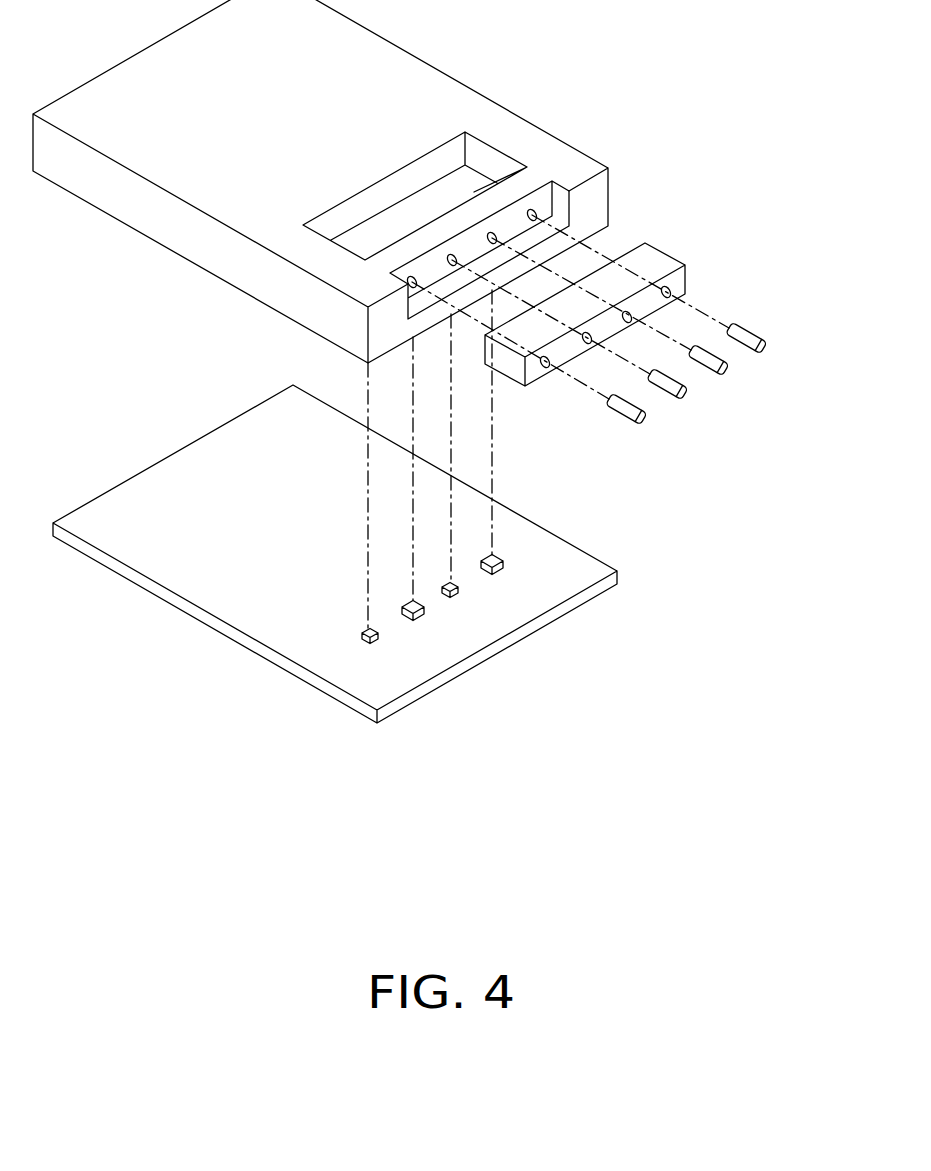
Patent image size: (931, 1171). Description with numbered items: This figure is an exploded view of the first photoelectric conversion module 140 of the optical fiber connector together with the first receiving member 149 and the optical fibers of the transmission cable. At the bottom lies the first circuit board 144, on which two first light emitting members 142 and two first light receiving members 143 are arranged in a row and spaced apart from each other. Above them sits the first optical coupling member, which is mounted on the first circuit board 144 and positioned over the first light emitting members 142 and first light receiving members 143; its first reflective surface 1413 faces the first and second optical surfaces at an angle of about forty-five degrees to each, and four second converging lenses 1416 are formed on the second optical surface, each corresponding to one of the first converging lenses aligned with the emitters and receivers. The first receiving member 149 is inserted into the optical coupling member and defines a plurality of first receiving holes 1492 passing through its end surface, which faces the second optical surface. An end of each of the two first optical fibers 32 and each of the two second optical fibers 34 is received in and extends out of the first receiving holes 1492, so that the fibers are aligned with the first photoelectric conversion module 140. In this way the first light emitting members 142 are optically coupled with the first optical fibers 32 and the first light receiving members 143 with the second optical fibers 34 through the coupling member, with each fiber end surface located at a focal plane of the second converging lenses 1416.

The first photoelectric conversion module 140 is at (417, 27).
The first reflective surface 1413 is at (474, 196).
The second converging lenses 1416 is at (535, 213).
The first receiving member 149 is at (648, 262).
The first receiving holes 1492 is at (673, 291).
The first optical fibers 32 is at (632, 421).
The second optical fibers 34 is at (670, 388).
The first light emitting members 142 is at (455, 590).
The first light receiving members 143 is at (493, 558).
The first circuit board 144 is at (428, 685).